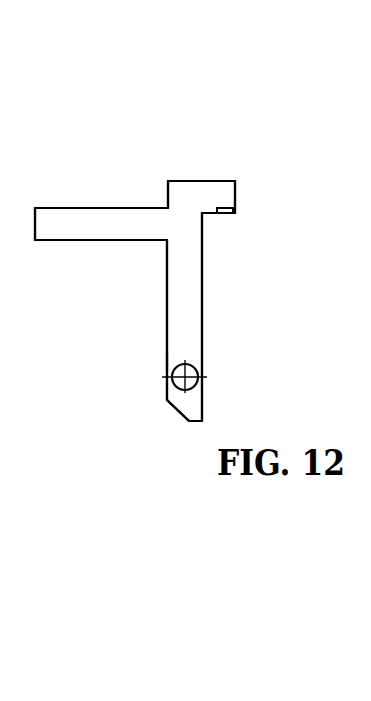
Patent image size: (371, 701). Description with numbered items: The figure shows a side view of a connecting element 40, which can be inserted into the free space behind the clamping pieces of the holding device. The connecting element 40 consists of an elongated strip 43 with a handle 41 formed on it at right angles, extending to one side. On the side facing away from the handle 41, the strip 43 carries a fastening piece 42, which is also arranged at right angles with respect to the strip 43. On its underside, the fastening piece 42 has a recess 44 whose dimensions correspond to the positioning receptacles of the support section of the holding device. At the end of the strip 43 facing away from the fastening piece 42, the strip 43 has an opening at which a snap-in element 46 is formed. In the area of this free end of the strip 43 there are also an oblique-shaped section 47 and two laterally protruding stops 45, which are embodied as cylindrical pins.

The connecting element 40 is at (193, 158).
The handle 41 is at (68, 215).
The fastening piece 42 is at (217, 178).
The strip 43 is at (192, 295).
The recess 44 is at (232, 217).
The stops 45 is at (162, 380).
The snap-in element 46 is at (166, 362).
The oblique-shaped section 47 is at (176, 415).